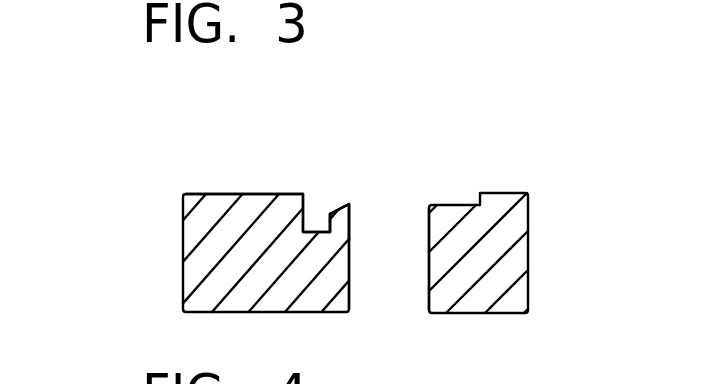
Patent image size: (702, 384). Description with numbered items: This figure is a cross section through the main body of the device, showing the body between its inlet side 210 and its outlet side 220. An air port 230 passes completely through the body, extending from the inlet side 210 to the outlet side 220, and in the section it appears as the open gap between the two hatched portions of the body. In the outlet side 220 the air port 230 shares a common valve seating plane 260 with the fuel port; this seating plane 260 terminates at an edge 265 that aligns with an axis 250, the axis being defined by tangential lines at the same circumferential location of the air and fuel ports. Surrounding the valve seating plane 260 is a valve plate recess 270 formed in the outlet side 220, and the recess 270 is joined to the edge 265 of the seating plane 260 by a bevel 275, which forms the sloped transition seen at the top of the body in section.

The inlet side 210 is at (190, 313).
The outlet side 220 is at (192, 195).
The air port 230 is at (393, 222).
The axis 250 is at (342, 209).
The valve seating plane 260 is at (470, 204).
The edge 265 is at (338, 209).
The valve plate recess 270 is at (304, 194).
The bevel 275 is at (328, 209).